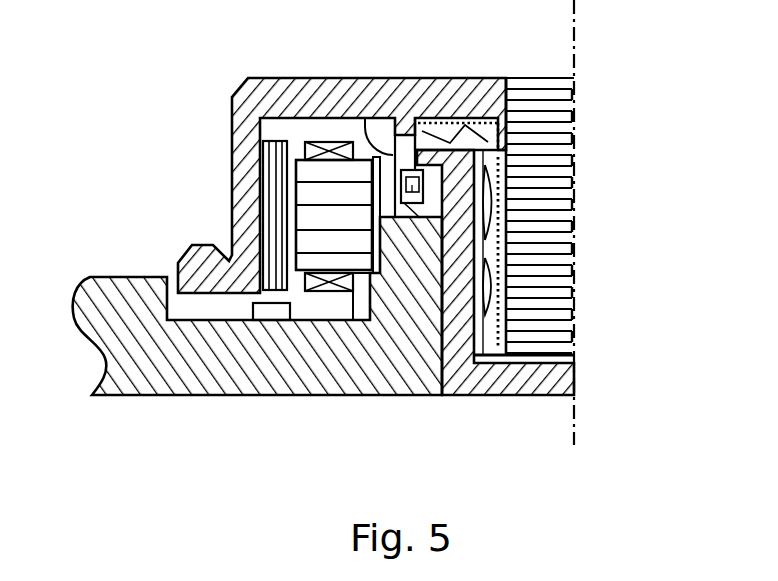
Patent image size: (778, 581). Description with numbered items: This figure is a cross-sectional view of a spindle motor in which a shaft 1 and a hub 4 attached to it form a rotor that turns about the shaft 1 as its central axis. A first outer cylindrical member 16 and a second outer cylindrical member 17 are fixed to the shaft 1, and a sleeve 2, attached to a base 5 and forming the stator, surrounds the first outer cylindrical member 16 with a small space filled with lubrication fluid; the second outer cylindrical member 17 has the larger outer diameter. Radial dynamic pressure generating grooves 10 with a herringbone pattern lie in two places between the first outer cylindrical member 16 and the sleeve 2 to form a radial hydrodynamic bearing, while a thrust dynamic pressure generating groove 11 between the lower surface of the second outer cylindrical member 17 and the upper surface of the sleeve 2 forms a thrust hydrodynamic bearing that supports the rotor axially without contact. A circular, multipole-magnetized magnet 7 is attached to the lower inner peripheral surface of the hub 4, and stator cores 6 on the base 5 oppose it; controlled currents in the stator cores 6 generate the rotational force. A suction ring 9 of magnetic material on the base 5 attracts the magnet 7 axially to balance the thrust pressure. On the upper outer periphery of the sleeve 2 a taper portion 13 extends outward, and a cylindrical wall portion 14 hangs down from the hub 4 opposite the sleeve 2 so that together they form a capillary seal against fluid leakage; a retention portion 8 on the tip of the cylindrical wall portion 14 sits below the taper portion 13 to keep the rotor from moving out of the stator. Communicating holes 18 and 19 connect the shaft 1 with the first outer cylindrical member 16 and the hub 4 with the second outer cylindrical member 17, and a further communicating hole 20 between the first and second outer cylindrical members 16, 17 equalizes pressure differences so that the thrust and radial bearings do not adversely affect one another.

The shaft 1 is at (545, 318).
The sleeve 2 is at (457, 322).
The hub 4 is at (246, 157).
The base 5 is at (140, 375).
The stator cores 6 is at (343, 170).
The magnet 7 is at (278, 213).
The retention portion 8 is at (404, 203).
The suction ring 9 is at (268, 320).
The radial dynamic pressure generating grooves 10 is at (507, 295).
The thrust dynamic pressure generating groove 11 is at (470, 148).
The taper portion 13 is at (498, 123).
The cylindrical wall portion 14 is at (340, 150).
The first outer cylindrical member 16 is at (507, 174).
The second outer cylindrical member 17 is at (450, 133).
The communicating hole 18 is at (508, 243).
The communicating hole 19 is at (506, 132).
The communicating hole 20 is at (507, 148).